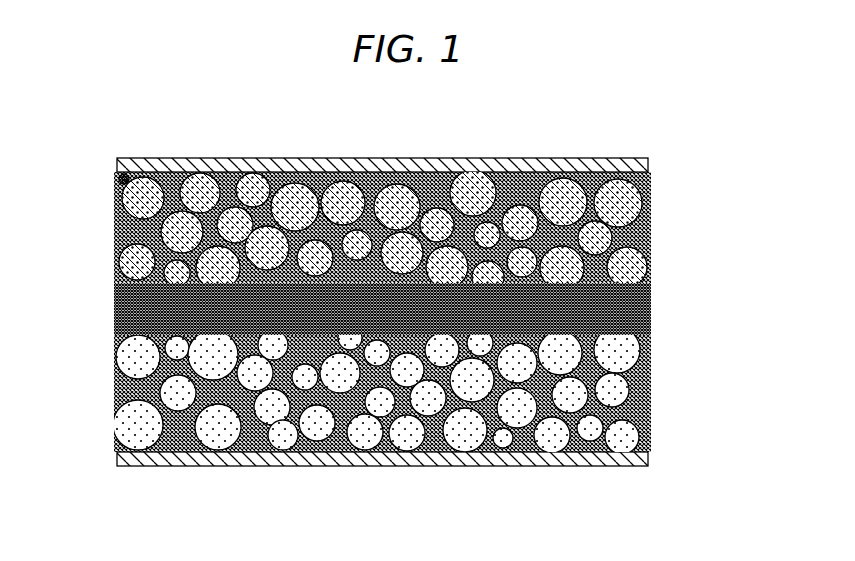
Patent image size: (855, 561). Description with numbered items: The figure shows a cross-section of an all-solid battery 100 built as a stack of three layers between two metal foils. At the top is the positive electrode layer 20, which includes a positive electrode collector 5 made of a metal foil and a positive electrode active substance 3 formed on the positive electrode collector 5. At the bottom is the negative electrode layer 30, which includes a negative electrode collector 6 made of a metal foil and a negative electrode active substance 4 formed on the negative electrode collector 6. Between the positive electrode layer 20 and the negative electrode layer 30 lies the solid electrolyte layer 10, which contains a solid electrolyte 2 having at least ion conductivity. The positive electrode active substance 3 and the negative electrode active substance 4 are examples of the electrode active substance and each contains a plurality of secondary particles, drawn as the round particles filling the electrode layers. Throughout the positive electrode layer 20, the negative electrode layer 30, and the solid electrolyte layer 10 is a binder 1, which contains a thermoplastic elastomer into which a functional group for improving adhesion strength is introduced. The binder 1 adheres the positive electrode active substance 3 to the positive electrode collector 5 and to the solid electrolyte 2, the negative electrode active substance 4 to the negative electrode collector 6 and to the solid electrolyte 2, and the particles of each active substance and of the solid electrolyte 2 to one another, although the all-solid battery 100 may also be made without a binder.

The all-solid battery 100 is at (411, 310).
The positive electrode layer 20 is at (378, 215).
The solid electrolyte layer 10 is at (668, 277).
The negative electrode layer 30 is at (378, 390).
The positive electrode collector 5 is at (650, 162).
The negative electrode collector 6 is at (652, 463).
The binder 1 is at (118, 254).
The solid electrolyte 2 is at (112, 293).
The positive electrode active substance 3 is at (120, 177).
The negative electrode active substance 4 is at (130, 425).